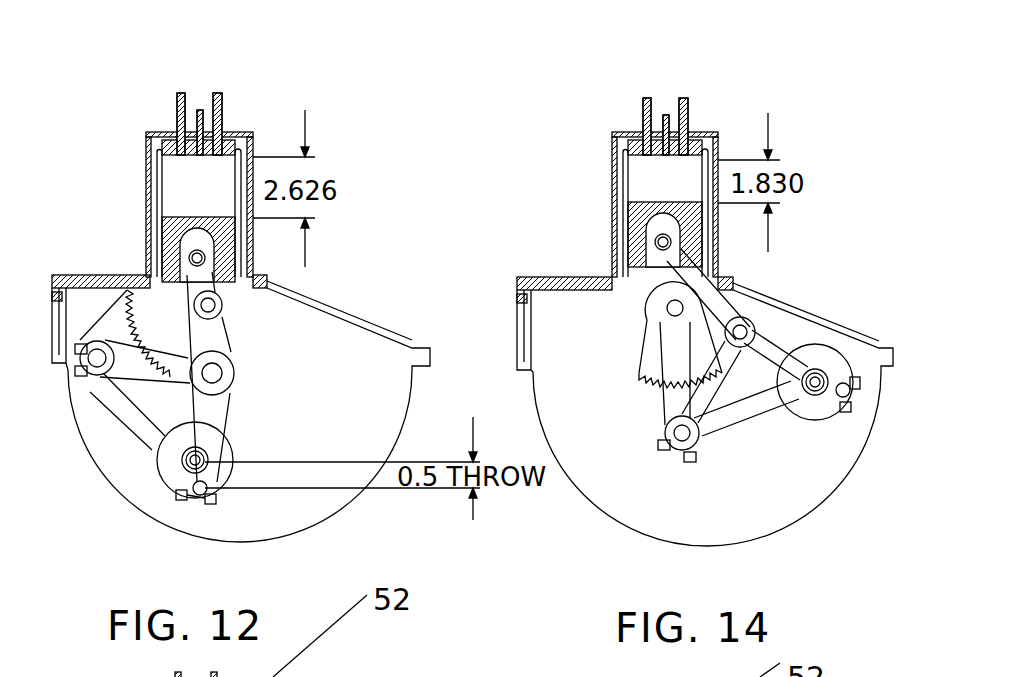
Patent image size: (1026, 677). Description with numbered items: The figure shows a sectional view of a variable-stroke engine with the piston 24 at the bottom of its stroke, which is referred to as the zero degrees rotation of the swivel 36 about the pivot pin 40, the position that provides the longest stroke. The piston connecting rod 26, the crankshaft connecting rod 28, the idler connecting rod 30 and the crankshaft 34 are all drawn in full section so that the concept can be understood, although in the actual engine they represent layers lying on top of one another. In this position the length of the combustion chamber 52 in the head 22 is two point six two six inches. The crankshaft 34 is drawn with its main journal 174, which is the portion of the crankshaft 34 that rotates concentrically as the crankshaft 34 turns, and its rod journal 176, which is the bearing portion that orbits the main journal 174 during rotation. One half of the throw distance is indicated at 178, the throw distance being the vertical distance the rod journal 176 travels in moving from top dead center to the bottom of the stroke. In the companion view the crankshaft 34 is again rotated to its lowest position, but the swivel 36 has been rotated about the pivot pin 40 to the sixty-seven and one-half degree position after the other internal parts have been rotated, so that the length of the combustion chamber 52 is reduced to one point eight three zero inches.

In FIG. 12, the head 22 is at (237, 133).
In FIG. 12, the piston 24 is at (248, 200).
In FIG. 12, the piston connecting rod 26 is at (207, 347).
In FIG. 12, the crankshaft connecting rod 28 is at (207, 415).
In FIG. 12, the idler connecting rod 30 is at (127, 363).
In FIG. 12, the crankshaft 34 is at (163, 460).
In FIG. 14, the crankshaft 34 is at (820, 360).
In FIG. 12, the swivel 36 is at (128, 397).
In FIG. 14, the swivel 36 is at (733, 413).
In FIG. 12, the pivot pin 40 is at (214, 303).
In FIG. 12, the combustion chamber 52 is at (210, 185).
In FIG. 14, the combustion chamber 52 is at (677, 183).
In FIG. 12, the main journal 174 is at (213, 452).
In FIG. 12, the rod journal 176 is at (202, 495).
In FIG. 12, the one half the throw distance 178 is at (430, 507).